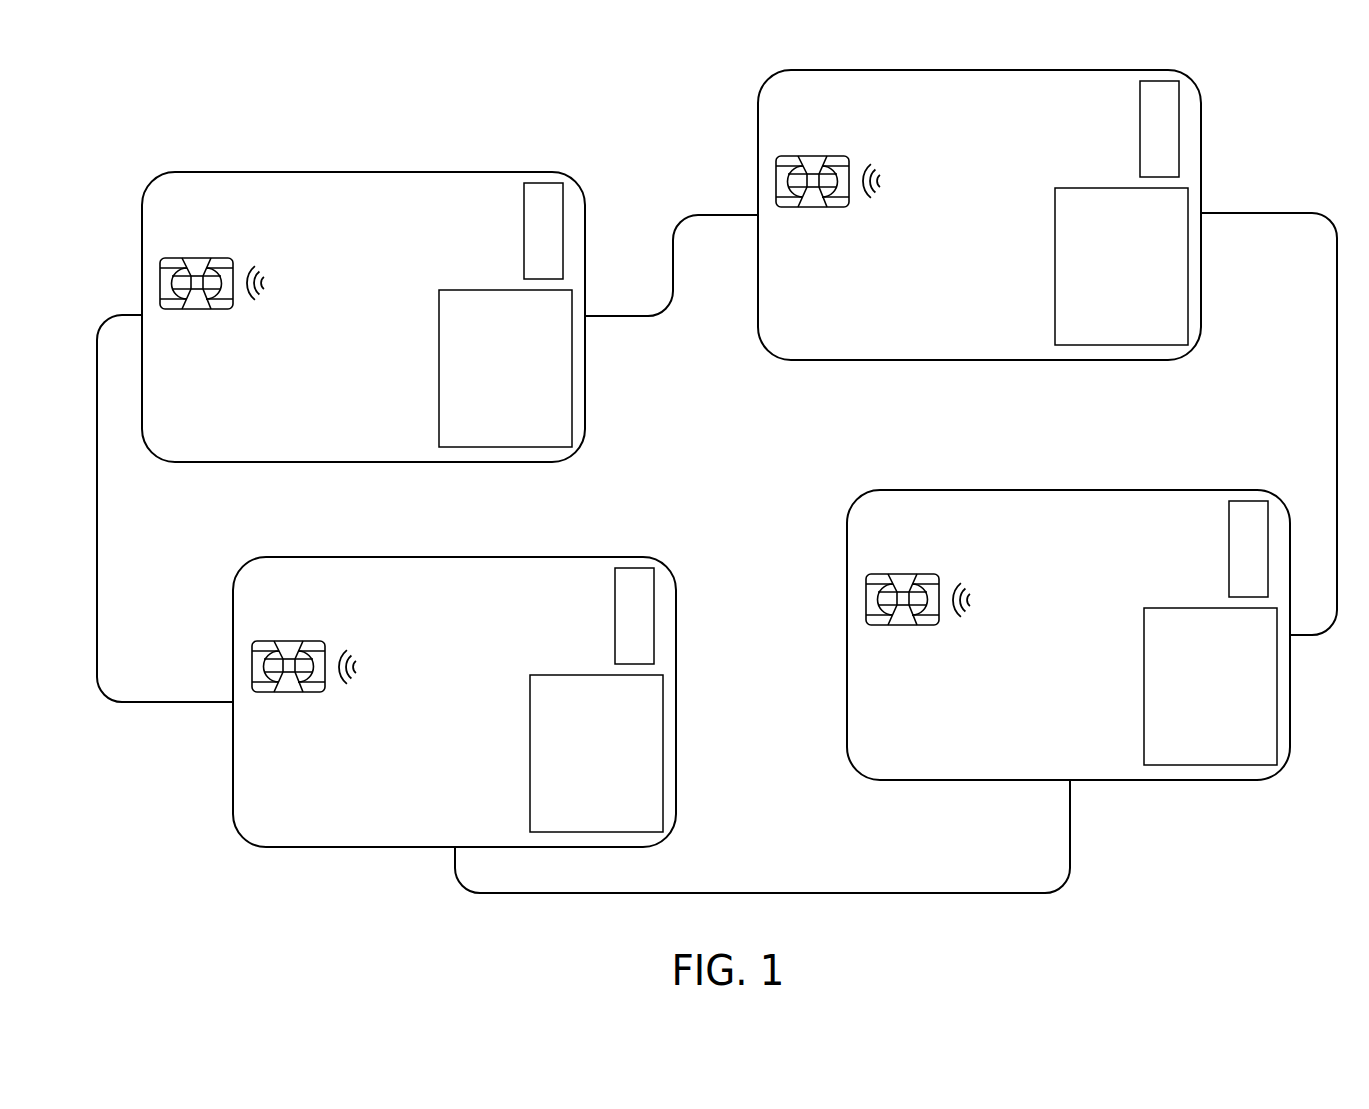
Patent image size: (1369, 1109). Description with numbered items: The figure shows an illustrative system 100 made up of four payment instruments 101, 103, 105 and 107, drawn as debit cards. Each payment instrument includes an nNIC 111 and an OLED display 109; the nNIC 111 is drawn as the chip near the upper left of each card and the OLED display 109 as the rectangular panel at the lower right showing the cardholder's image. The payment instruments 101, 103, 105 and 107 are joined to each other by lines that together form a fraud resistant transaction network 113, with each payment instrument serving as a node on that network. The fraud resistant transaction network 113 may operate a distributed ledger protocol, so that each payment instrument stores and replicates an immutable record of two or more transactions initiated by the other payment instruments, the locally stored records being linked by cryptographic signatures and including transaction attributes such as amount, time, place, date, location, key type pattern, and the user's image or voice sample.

The system 100 is at (146, 94).
The payment instrument 101 is at (366, 302).
The payment instrument 103 is at (1201, 131).
The payment instrument 105 is at (1063, 490).
The payment instrument 107 is at (455, 557).
The OLED display 109 is at (572, 378).
The nNIC 111 is at (160, 281).
The fraud resistant transaction network 113 is at (1337, 428).